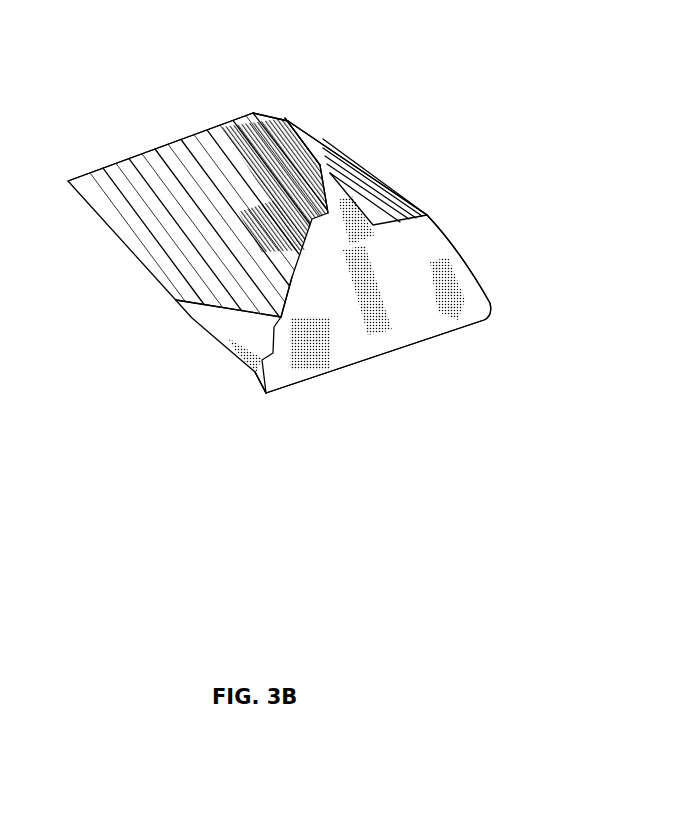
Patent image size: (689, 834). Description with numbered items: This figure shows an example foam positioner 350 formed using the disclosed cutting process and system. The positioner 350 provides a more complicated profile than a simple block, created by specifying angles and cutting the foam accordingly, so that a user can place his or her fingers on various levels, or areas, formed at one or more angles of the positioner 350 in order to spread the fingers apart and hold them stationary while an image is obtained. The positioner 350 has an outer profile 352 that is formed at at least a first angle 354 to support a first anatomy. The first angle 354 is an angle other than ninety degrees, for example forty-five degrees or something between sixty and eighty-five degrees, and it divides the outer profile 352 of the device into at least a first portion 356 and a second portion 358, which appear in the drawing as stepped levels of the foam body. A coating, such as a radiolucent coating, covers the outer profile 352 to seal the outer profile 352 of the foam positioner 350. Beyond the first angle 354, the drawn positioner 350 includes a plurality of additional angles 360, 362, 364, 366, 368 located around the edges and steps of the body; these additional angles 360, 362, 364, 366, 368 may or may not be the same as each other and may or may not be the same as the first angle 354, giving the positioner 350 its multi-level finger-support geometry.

The foam positioner 350 is at (367, 182).
The outer profile 352 is at (478, 283).
The first angle 354 is at (323, 168).
The first portion 356 is at (285, 124).
The second portion 358 is at (222, 135).
The additional angle 360 is at (422, 226).
The additional angle 362 is at (315, 219).
The additional angle 364 is at (292, 277).
The additional angle 366 is at (257, 371).
The additional angle 368 is at (283, 322).